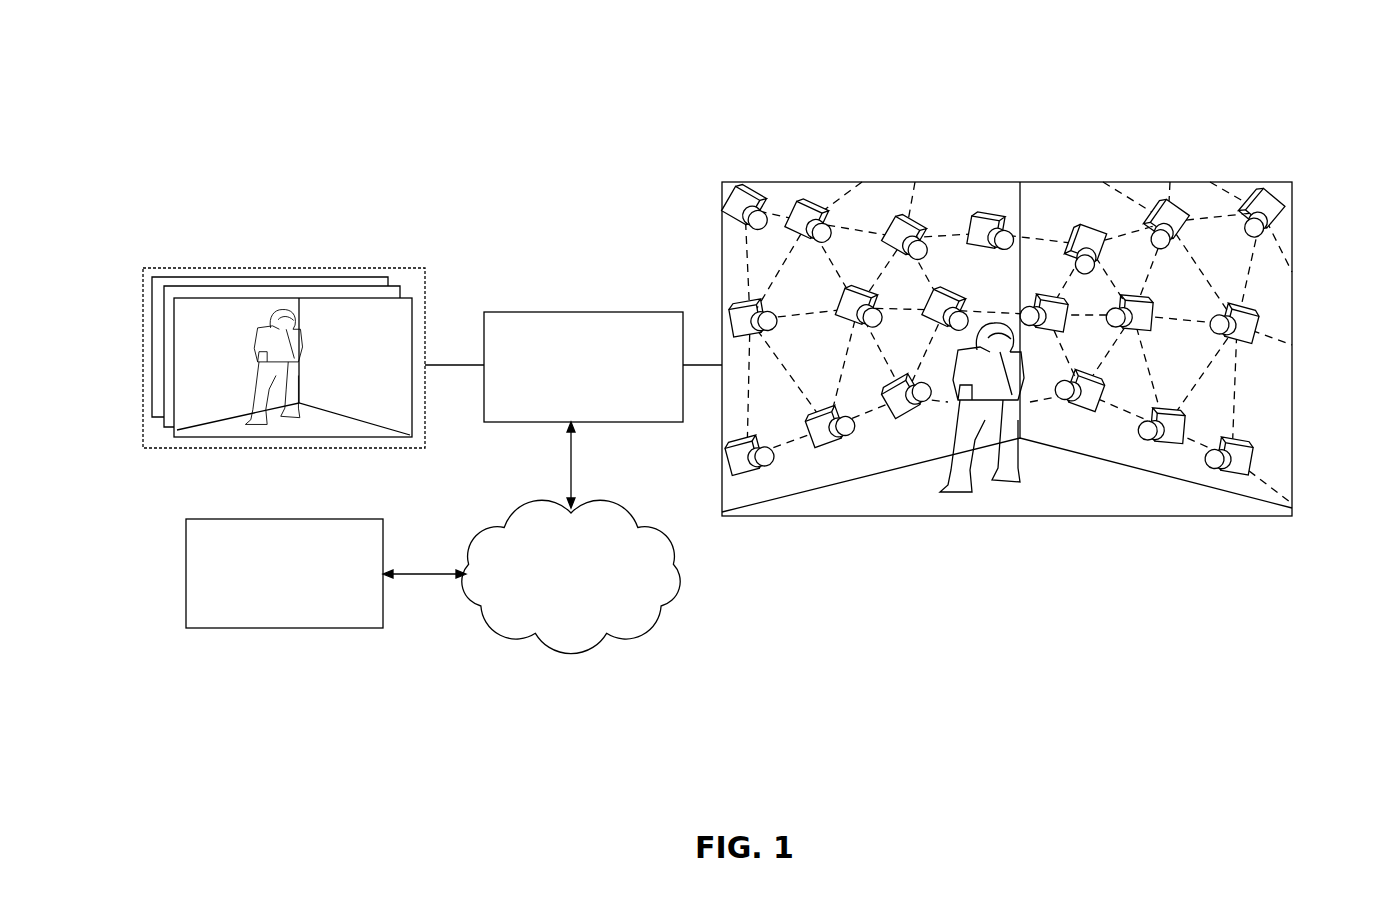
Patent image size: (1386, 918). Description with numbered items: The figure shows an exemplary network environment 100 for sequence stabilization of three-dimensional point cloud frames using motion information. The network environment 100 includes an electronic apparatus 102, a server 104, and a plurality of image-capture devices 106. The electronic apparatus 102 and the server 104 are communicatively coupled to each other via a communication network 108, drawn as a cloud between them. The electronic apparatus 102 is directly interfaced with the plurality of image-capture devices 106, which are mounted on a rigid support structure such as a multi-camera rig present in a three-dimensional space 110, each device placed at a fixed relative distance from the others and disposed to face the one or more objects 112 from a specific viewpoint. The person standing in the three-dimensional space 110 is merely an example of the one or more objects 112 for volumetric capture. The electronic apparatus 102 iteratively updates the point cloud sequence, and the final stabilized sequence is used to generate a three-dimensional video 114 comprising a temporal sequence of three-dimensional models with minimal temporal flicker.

The network environment 100 is at (238, 100).
The electronic apparatus 102 is at (583, 367).
The server 104 is at (284, 573).
The plurality of image-capture devices 106 is at (1087, 225).
The communication network 108 is at (571, 576).
The 3D space 110 is at (807, 183).
The one or more objects 112 is at (1012, 442).
The 3D video 114 is at (262, 273).